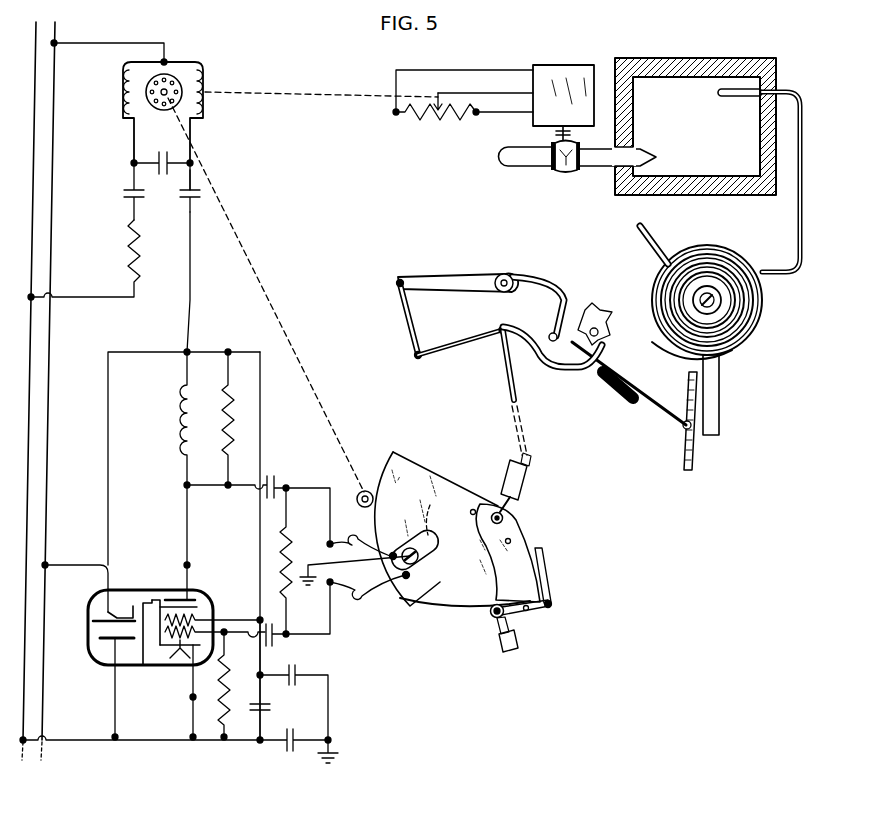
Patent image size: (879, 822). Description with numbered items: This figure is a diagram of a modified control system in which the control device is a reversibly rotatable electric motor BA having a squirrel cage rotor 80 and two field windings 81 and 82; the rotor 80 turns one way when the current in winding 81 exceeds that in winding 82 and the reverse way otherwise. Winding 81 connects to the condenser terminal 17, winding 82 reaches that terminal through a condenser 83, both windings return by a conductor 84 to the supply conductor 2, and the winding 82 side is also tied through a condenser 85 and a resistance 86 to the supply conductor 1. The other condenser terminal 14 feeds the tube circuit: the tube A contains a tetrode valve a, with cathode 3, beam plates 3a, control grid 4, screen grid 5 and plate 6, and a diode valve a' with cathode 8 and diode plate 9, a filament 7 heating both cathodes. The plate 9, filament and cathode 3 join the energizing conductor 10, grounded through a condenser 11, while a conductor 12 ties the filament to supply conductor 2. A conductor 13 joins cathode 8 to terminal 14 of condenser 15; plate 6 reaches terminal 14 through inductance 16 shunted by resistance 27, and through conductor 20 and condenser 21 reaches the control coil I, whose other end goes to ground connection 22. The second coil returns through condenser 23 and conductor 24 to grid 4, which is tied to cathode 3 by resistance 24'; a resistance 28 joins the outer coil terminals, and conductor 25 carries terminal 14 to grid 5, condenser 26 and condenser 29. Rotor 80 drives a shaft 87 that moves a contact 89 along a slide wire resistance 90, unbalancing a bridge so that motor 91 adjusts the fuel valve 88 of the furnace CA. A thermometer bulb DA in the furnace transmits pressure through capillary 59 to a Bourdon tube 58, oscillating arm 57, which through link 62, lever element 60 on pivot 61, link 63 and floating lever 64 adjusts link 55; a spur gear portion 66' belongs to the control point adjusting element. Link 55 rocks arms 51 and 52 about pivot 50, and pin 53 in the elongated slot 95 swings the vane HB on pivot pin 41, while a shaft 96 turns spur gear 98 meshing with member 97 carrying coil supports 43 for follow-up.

The supply conductor 1 is at (34, 33).
The supply conductor 2 is at (57, 35).
The conductor 84 is at (93, 45).
The reversibly rotatable electric motor BA is at (215, 61).
The field winding 81 is at (206, 82).
The field winding 82 is at (119, 88).
The squirrel cage rotor 80 is at (164, 110).
The shaft 87 is at (286, 97).
The shaft 96 is at (262, 286).
The condenser 83 is at (163, 174).
The condenser 85 is at (124, 190).
The resistance 86 is at (126, 254).
The condenser 15 is at (195, 199).
The condenser terminal 17 is at (192, 179).
The condenser terminal 14 is at (191, 259).
The electric motor 91 is at (563, 68).
The slide wire resistance 90 is at (440, 120).
The contact 89 is at (436, 92).
The valve 88 is at (563, 172).
The furnace CA is at (688, 60).
The thermometer bulb DA is at (716, 91).
The capillary 59 is at (796, 223).
The Bourdon tube 58 is at (758, 328).
The arm 57 is at (720, 383).
The link 62 is at (650, 399).
The spur gear portion 66' is at (610, 323).
The lever element 60 is at (453, 276).
The pivot 61 is at (503, 274).
The link 63 is at (403, 308).
The floating lever 64 is at (474, 342).
The member 97 is at (413, 468).
The spur gear 98 is at (358, 492).
The inductance shield vane HB is at (461, 524).
The pivot pin 41 is at (497, 510).
The inductance or control coil I is at (427, 508).
The coil supports 43 is at (405, 544).
The elongated slot 95 is at (427, 592).
The link 55 is at (548, 558).
The rocker arm 52 is at (545, 606).
The pin 53 is at (484, 611).
The pivot 50 is at (492, 618).
The rocker arm 51 is at (497, 646).
The conductor 24 is at (345, 562).
The ground connection 22 is at (318, 562).
The resistance 28 is at (292, 541).
The condenser 21 is at (270, 476).
The conductor 20 is at (200, 487).
The conductor 25 is at (262, 426).
The resistance 27 is at (234, 410).
The inductance 16 is at (182, 410).
The conductor 13 is at (109, 429).
The conductor 12 is at (55, 560).
The tube A is at (154, 588).
The cathode 8 is at (92, 620).
The diode valve a' is at (93, 638).
The diode plate 9 is at (108, 656).
The filament 7 is at (143, 666).
The anode or plate 6 is at (190, 598).
The beam plates 3a is at (198, 604).
The screen grid 5 is at (205, 615).
The tetrode valve a is at (215, 620).
The cathode 3 is at (173, 666).
The control grid 4 is at (196, 660).
The resistance 24' is at (238, 684).
The condenser 23 is at (267, 646).
The condenser 26 is at (270, 707).
The condenser 29 is at (293, 672).
The condenser 11 is at (288, 756).
The energizing conductor 10 is at (162, 744).